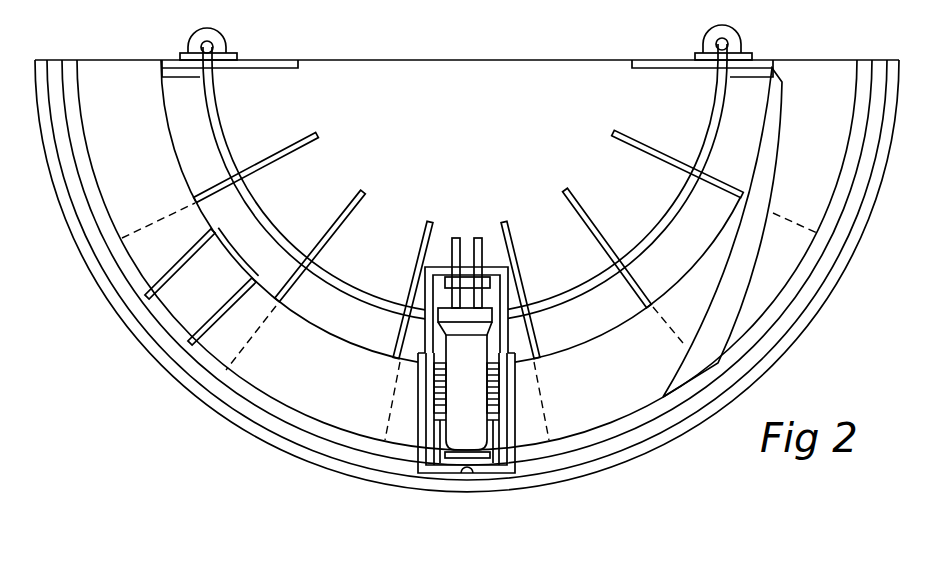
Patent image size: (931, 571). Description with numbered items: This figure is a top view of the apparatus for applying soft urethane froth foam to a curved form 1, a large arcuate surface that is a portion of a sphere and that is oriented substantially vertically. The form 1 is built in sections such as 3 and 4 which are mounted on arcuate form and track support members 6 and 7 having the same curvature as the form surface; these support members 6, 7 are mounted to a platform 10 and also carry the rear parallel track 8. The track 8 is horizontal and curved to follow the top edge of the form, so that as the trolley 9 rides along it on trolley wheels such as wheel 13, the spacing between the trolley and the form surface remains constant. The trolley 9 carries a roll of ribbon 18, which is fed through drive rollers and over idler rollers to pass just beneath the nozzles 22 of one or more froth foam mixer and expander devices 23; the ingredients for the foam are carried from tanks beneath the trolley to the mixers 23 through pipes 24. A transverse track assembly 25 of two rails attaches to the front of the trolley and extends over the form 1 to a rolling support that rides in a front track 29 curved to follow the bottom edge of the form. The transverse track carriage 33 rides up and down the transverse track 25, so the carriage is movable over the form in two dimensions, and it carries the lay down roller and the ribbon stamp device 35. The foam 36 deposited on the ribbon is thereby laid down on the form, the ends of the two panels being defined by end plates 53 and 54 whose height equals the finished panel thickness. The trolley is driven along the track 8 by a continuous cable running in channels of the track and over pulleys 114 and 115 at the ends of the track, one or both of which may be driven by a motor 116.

The form 1 is at (221, 374).
The form section 3 is at (253, 302).
The form section 4 is at (315, 342).
The form and track support member 6 is at (330, 280).
The form and track support member 7 is at (395, 305).
The rear parallel track 8 is at (263, 207).
The trolley 9 is at (517, 280).
The platform 10 is at (466, 114).
The trolley wheel 13 is at (467, 38).
The ribbon 18 is at (506, 266).
The nozzle 22 is at (483, 322).
The froth foam mixer and expander device 23 is at (485, 315).
The pipe 24 is at (480, 234).
The transverse track assembly 25 is at (519, 401).
The front track 29 is at (358, 463).
The transverse track carriage 33 is at (507, 468).
The ribbon stamp device 35 is at (462, 476).
The foam 36 is at (478, 417).
The end plate 53 is at (167, 272).
The end plate 54 is at (748, 288).
The pulley 114 is at (216, 42).
The pulley 115 is at (733, 40).
The motor 116 is at (197, 33).